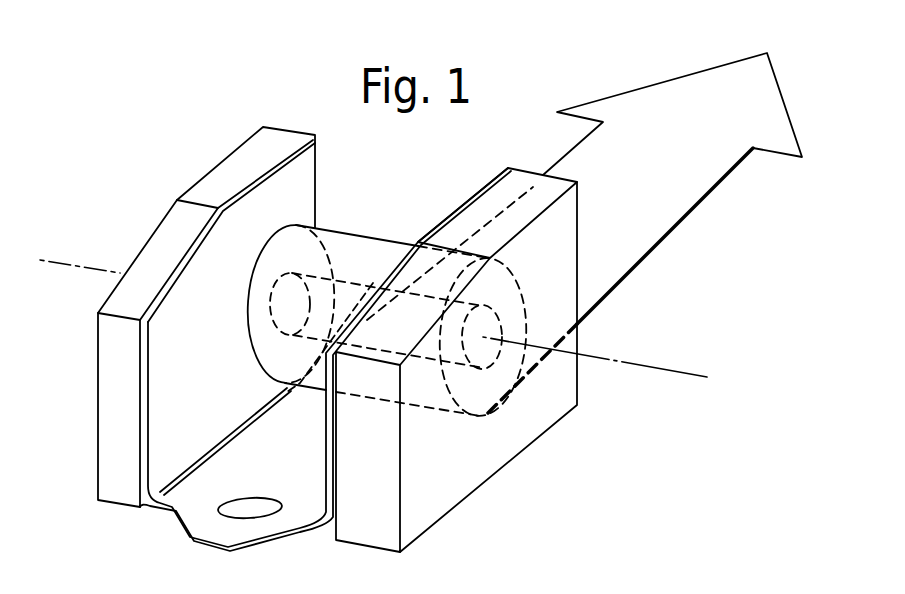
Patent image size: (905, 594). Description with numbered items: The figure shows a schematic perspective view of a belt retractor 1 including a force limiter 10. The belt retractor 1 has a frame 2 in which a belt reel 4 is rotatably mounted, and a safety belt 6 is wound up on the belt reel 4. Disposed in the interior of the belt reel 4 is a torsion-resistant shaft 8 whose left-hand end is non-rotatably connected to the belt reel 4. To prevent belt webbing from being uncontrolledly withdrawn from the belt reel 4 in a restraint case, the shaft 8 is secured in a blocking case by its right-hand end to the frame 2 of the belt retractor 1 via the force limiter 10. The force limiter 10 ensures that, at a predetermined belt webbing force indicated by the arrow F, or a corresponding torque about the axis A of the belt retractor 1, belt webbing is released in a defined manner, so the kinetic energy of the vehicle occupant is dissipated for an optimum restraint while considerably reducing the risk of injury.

The belt retractor 1 is at (337, 322).
The frame 2 is at (200, 516).
The belt reel 4 is at (348, 247).
The safety belt 6 is at (622, 258).
The torsion-resistant shaft 8 is at (373, 283).
The force limiter 10 is at (470, 458).
The arrow indicating belt webbing force F is at (682, 93).
The axis A is at (707, 377).